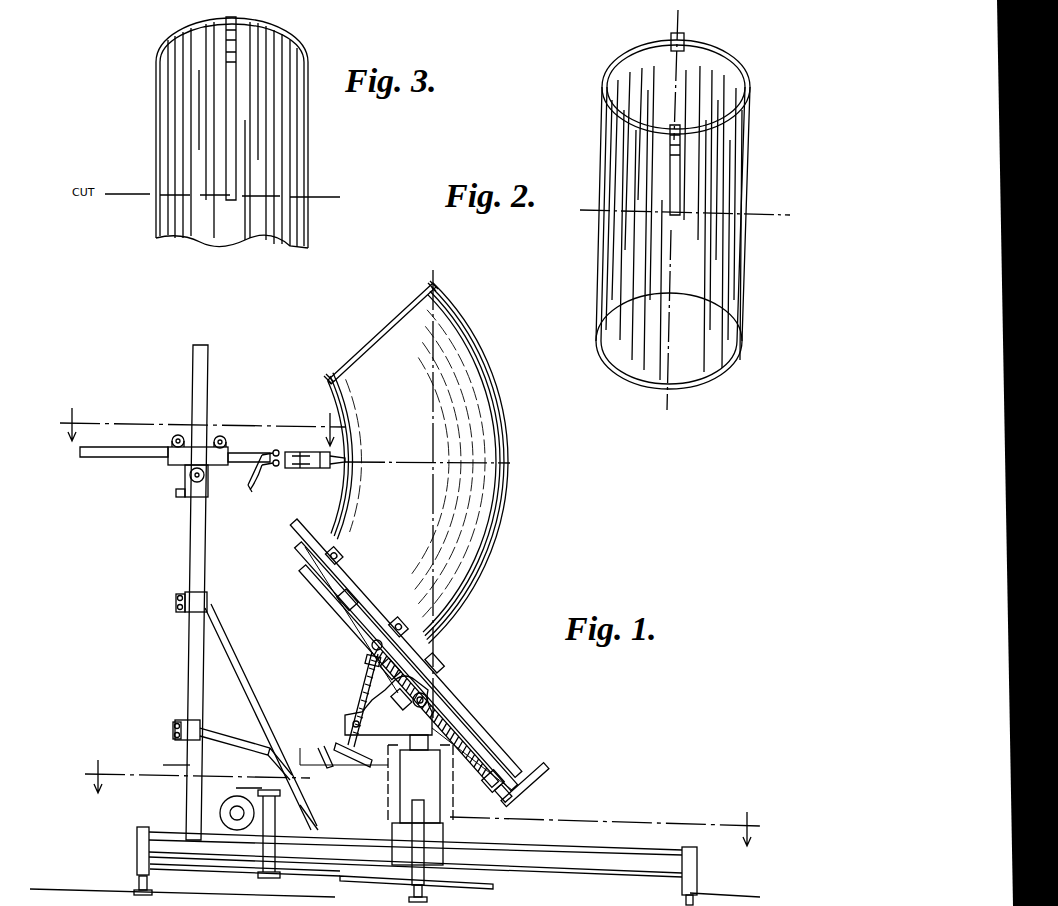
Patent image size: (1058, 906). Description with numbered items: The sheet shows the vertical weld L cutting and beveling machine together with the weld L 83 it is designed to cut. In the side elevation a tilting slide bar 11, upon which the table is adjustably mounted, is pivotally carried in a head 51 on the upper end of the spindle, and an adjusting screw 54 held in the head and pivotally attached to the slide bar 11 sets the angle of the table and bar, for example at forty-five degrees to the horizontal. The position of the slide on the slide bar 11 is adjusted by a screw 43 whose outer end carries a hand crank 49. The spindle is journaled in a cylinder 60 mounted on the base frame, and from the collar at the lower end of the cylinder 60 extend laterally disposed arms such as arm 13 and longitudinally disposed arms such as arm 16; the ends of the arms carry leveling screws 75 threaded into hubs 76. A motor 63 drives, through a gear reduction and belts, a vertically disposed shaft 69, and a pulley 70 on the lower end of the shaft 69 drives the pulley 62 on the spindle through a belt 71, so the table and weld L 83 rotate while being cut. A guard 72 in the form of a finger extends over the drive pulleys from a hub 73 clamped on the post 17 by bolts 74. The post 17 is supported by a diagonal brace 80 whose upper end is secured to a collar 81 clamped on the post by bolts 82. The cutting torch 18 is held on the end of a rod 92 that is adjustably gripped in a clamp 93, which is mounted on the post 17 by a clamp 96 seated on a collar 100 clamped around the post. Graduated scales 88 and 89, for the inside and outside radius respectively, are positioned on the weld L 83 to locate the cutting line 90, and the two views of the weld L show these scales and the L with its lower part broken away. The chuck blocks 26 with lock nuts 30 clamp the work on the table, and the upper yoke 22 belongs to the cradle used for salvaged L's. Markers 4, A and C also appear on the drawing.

In FIG. 1, the tilting slide bar 11 is at (352, 625).
In FIG. 1, the laterally disposed arm 13 is at (195, 423).
In FIG. 1, the longitudinally disposed arm 16 is at (612, 850).
In FIG. 1, the post 17 is at (190, 565).
In FIG. 1, the cutting torch 18 is at (310, 470).
In FIG. 1, the upper horizontally disposed yoke 22 is at (410, 742).
In FIG. 1, the chuck block 26 is at (356, 560).
In FIG. 1, the lock nut 30 is at (420, 707).
In FIG. 1, the screw 43 is at (490, 742).
In FIG. 1, the hand crank 49 is at (522, 795).
In FIG. 1, the head 51 is at (460, 708).
In FIG. 1, the adjusting screw 54 is at (364, 682).
In FIG. 1, the cylinder 60 is at (408, 795).
In FIG. 1, the pulley 62 is at (458, 884).
In FIG. 1, the motor 63 is at (232, 798).
In FIG. 1, the vertically disposed shaft 69 is at (305, 812).
In FIG. 1, the pulley 70 is at (433, 655).
In FIG. 1, the belt 71 is at (336, 878).
In FIG. 1, the guard 72 is at (222, 726).
In FIG. 1, the hub 73 is at (190, 718).
In FIG. 1, the bolt 74 is at (172, 726).
In FIG. 1, the leveling screw 75 is at (133, 883).
In FIG. 1, the hub 76 is at (137, 841).
In FIG. 1, the diagonal brace 80 is at (226, 660).
In FIG. 1, the collar 81 is at (205, 596).
In FIG. 1, the bolt 82 is at (176, 602).
In FIG. 3, the weld L 83 is at (300, 192).
In FIG. 2, the weld L 83 is at (738, 273).
In FIG. 1, the weld L 83 is at (386, 338).
In FIG. 2, the graduated scale 88 is at (670, 196).
In FIG. 1, the graduated scale 88 is at (326, 388).
In FIG. 3, the graduated scale 89 is at (225, 184).
In FIG. 2, the graduated scale 89 is at (686, 43).
In FIG. 1, the graduated scale 89 is at (450, 312).
In FIG. 1, the cutting line 90 is at (415, 465).
In FIG. 1, the rod 92 is at (123, 458).
In FIG. 1, the clamp 93 is at (178, 465).
In FIG. 1, the clamp 96 is at (196, 440).
In FIG. 1, the collar 100 is at (206, 496).
In FIG. 1, the section line 4 is at (421, 799).
In FIG. 1, the axis A is at (165, 764).
In FIG. 1, the center rod C is at (424, 812).